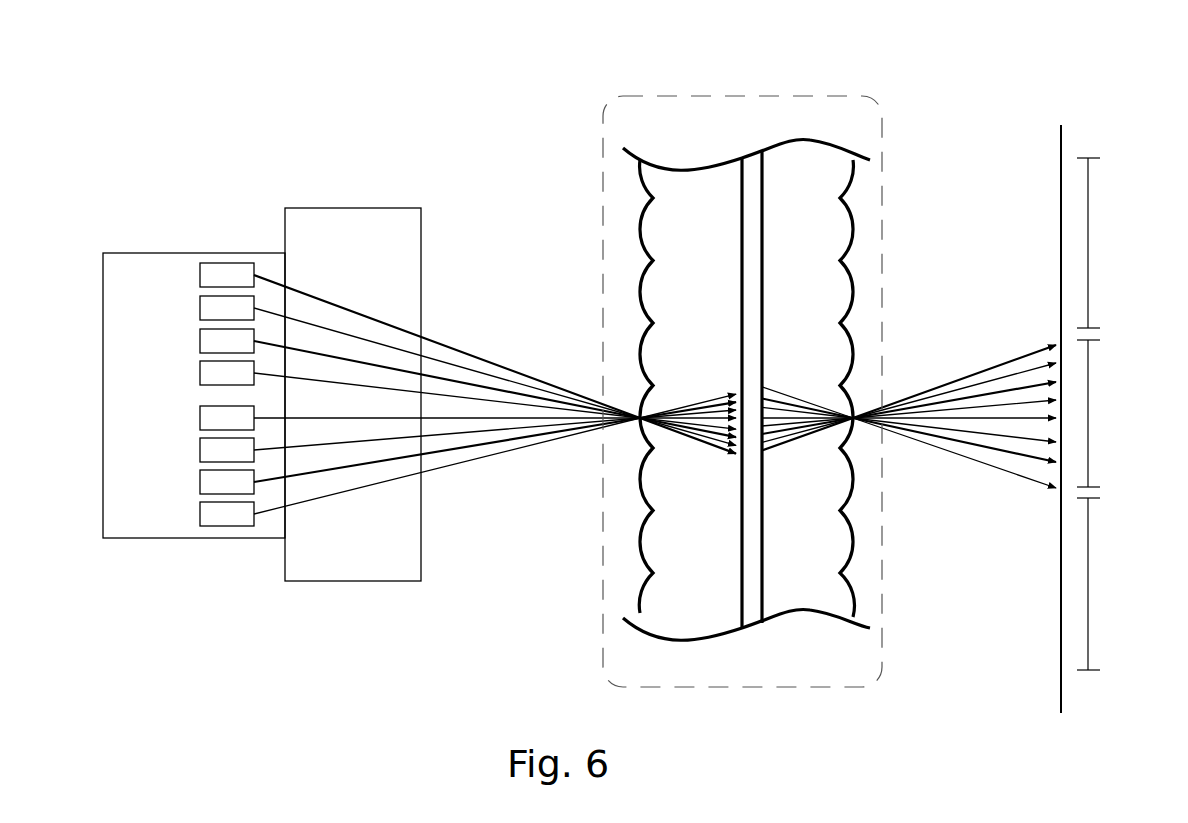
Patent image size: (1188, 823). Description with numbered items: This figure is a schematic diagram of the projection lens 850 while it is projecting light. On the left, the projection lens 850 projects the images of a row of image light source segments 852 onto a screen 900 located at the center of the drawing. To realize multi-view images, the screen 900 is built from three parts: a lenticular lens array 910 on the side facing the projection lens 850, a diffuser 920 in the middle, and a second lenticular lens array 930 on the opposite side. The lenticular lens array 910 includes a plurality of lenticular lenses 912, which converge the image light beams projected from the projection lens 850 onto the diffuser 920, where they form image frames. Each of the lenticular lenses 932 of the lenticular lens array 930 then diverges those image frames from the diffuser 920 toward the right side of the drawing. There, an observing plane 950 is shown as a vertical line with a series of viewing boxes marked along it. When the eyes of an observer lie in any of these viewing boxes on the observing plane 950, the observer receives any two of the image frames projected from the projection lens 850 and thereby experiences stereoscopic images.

The projection lens 850 is at (131, 253).
The image light source segments 852 is at (217, 263).
The screen 900 is at (741, 357).
The lenticular lens array 910 is at (548, 386).
The lenticular lenses 912 is at (643, 342).
The diffuser 920 is at (763, 193).
The lenticular lens array 930 is at (940, 388).
The lenticular lenses 932 is at (848, 338).
The observing plane 950 is at (1063, 137).